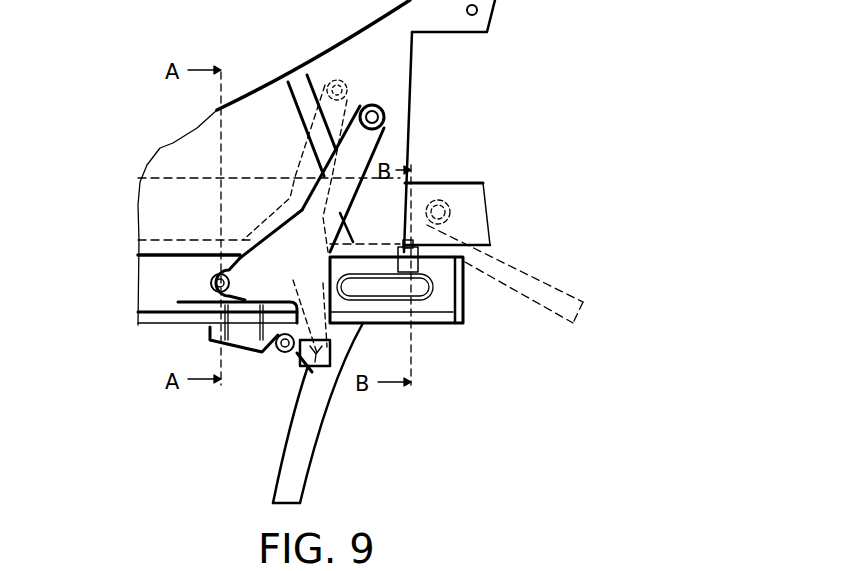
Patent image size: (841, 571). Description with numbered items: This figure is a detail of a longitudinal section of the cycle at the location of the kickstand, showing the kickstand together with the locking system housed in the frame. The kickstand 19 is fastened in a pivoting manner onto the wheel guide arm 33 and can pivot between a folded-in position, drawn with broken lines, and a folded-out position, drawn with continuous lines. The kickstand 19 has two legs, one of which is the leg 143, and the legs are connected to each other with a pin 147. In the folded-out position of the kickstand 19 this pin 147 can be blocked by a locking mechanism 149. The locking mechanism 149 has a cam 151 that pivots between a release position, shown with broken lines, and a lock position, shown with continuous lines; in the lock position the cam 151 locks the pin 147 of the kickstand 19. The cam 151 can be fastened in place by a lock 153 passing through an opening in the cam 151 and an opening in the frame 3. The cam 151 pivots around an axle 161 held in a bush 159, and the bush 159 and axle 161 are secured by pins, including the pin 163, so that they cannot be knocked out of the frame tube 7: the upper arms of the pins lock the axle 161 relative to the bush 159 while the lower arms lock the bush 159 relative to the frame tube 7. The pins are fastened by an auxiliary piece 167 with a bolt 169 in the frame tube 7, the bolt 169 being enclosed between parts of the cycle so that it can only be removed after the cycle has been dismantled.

The frame 3 is at (388, 52).
The frame tube 7 is at (147, 327).
The kickstand 19 is at (330, 416).
The wheel guide arm 33 is at (467, 192).
The leg 143 is at (297, 452).
The pin 147 is at (280, 350).
The locking mechanism 149 is at (272, 158).
The cam 151 is at (283, 237).
The lock 153 is at (382, 110).
The bush 159 is at (212, 278).
The axle 161 is at (216, 287).
The pin 163 is at (372, 305).
The auxiliary piece 167 is at (448, 325).
The bolt 169 is at (407, 247).